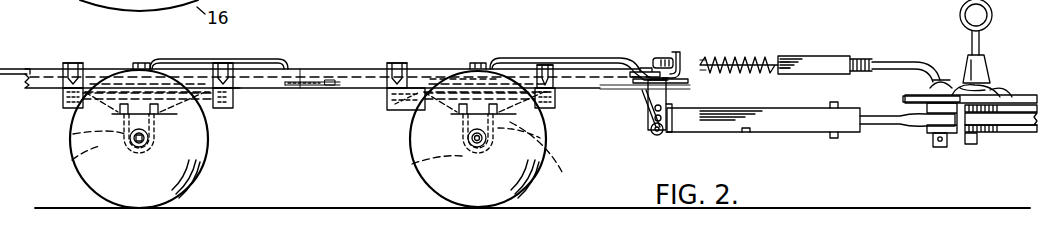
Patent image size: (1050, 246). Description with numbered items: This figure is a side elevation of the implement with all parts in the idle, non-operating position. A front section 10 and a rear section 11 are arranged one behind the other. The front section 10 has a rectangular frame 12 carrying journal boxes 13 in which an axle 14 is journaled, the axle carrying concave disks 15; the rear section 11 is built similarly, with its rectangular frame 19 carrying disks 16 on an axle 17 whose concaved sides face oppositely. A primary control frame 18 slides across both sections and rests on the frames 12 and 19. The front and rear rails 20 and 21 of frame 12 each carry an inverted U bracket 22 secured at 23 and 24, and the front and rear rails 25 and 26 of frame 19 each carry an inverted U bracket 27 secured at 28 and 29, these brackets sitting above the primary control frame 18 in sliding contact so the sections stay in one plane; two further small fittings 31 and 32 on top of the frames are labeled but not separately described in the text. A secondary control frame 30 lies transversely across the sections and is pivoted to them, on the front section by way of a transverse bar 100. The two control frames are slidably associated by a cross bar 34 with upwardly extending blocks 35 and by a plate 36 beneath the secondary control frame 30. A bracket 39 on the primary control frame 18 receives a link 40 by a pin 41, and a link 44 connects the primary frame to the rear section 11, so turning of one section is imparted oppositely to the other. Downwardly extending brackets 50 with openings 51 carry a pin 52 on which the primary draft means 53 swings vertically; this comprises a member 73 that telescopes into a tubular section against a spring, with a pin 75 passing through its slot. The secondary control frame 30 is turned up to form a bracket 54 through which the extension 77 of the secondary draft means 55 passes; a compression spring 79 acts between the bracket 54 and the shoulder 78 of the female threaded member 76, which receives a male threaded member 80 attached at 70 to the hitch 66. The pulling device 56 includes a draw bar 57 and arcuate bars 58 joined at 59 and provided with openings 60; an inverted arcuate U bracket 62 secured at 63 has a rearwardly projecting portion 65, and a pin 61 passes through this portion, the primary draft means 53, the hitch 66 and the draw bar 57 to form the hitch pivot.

The front section 10 is at (396, 108).
The rear section 11 is at (224, 106).
The rectangular frame 12 is at (555, 105).
The journal boxes 13 is at (548, 122).
The axle 14 is at (538, 168).
The disks 15 is at (438, 162).
The disks 16 is at (92, 158).
The axle 17 is at (76, 135).
The primary control frame 18 is at (348, 78).
The rectangular frame 19 is at (233, 103).
The front rail 20 is at (553, 110).
The rear rail 21 is at (387, 100).
The inverted U bracket 22 is at (405, 64).
The securing point 23 is at (548, 87).
The securing point 24 is at (395, 64).
The front rail 25 is at (230, 108).
The rear rail 26 is at (63, 98).
The inverted U bracket 27 is at (73, 62).
The securing point 28 is at (226, 78).
The securing point 29 is at (68, 63).
The secondary control frame 30 is at (8, 68).
The bracket 31 is at (142, 62).
The bracket 32 is at (478, 62).
The cross bar 34 is at (295, 86).
The upwardly extending blocks 35 is at (331, 86).
The plate 36 is at (607, 78).
The bracket 39 is at (652, 114).
The link 40 is at (527, 57).
The pin 41 is at (648, 70).
The link 44 is at (278, 58).
The downwardly extending brackets 50 is at (648, 96).
The openings 51 is at (652, 132).
The pin 52 is at (668, 133).
The primary draft means 53 is at (765, 120).
The bracket 54 is at (676, 52).
The secondary draft means 55 is at (820, 58).
The pulling device 56 is at (965, 135).
The draw bar 57 is at (995, 128).
The arcuate bars 58 is at (1020, 128).
The securing point 59 is at (970, 145).
The openings 60 is at (989, 27).
The pin 61 is at (936, 147).
The inverted arcuate U bracket 62 is at (990, 86).
The securing point 63 is at (1010, 90).
The rearwardly projecting portion 65 is at (956, 92).
The hitch 66 is at (903, 98).
The attachment point 70 is at (938, 78).
The member 73 is at (878, 126).
The pin 75 is at (834, 139).
The female threaded member 76 is at (852, 58).
The extension 77 is at (757, 57).
The shoulder 78 is at (782, 61).
The compression spring 79 is at (728, 57).
The male threaded member 80 is at (888, 61).
The bar 100 is at (450, 78).